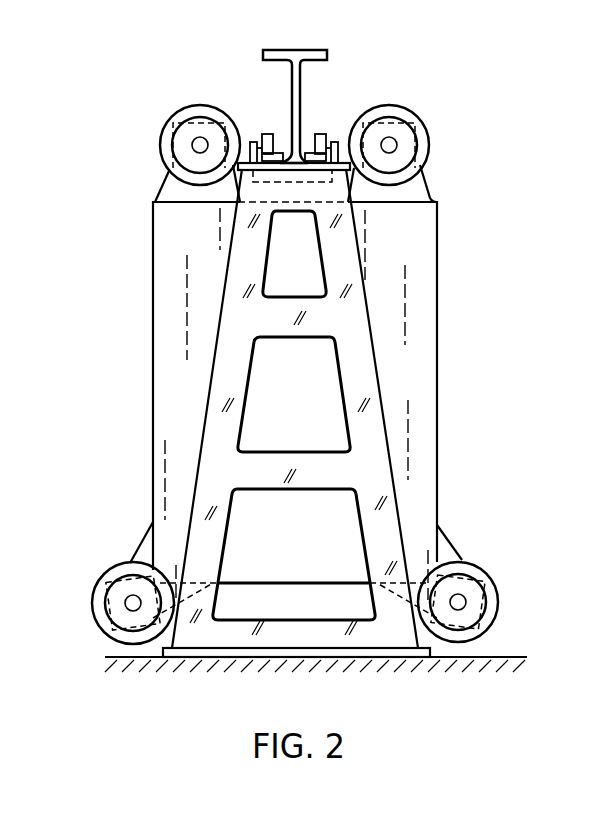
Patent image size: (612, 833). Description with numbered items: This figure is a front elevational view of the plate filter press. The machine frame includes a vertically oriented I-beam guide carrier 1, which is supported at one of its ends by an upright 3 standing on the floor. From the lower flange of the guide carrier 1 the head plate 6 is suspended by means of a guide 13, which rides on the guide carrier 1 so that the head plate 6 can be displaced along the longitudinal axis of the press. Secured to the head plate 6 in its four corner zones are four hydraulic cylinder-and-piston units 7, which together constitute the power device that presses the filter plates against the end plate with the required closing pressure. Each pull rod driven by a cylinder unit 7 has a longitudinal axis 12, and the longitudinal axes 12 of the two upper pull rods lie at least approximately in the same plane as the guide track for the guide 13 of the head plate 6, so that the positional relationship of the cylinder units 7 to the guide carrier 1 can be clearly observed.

The guide carrier 1 is at (312, 50).
The upright 3 is at (374, 367).
The head plate 6 is at (428, 267).
The hydraulic cylinder-and-piston unit 7 is at (162, 130).
The longitudinal axis 12 is at (200, 140).
The guide 13 is at (261, 131).